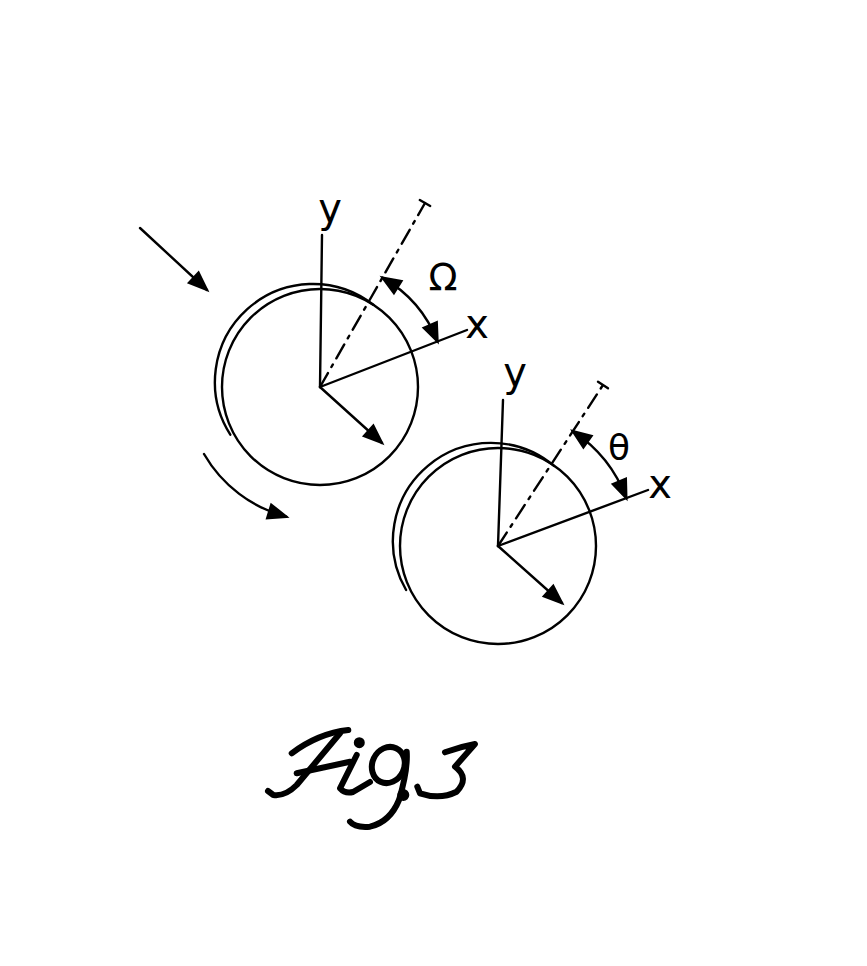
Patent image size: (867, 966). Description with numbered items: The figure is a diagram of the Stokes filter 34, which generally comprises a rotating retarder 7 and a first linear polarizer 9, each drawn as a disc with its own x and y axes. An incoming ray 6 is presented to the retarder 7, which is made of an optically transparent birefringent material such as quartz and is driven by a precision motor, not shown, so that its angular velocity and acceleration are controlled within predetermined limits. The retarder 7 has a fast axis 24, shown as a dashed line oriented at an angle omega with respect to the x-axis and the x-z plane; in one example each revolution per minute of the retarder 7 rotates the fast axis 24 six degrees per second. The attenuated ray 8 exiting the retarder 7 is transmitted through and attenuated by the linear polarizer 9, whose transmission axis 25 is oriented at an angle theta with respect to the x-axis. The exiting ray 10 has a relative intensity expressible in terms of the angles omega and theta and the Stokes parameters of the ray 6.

The Stokes filter 34 is at (292, 132).
The ray 6 is at (147, 238).
The retarder 7 is at (218, 370).
The ray 8 is at (347, 418).
The first linear polarizer 9 is at (392, 548).
The ray 10 is at (523, 577).
The fast axis 24 is at (428, 207).
The transmission axis 25 is at (606, 392).